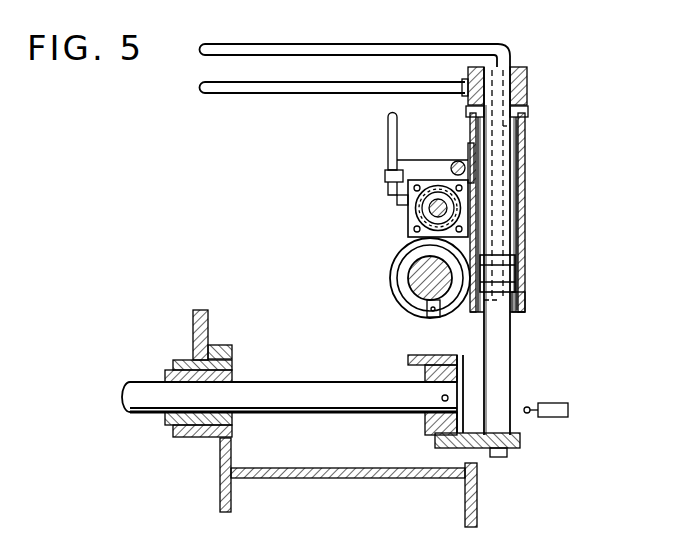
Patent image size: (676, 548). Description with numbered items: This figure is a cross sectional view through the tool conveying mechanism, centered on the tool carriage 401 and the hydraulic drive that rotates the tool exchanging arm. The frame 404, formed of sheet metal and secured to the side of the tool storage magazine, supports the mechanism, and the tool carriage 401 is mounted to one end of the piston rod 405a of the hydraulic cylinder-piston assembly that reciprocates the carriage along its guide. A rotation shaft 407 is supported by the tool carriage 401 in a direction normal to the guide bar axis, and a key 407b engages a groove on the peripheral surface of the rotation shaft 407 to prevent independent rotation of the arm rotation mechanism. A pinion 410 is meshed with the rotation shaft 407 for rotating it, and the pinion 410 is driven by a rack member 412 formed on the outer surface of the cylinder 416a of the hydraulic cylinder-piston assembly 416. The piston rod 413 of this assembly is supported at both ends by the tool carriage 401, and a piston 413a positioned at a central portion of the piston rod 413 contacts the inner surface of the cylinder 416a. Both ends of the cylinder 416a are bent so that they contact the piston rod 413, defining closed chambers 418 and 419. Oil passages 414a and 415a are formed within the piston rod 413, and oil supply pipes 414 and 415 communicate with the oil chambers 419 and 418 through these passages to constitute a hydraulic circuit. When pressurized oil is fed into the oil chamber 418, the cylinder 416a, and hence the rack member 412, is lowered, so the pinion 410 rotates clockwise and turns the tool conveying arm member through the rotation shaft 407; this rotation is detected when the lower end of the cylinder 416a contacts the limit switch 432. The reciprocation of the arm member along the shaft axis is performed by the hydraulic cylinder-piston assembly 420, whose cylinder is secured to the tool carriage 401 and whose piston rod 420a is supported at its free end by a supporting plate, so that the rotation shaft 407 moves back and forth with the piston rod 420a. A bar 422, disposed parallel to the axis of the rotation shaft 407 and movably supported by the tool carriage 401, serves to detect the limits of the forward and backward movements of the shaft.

The tool carriage 401 is at (430, 370).
The frame 404 is at (193, 325).
The piston rod 405a is at (292, 388).
The rotation shaft 407 is at (416, 277).
The key 407b is at (432, 313).
The pinion 410 is at (405, 263).
The rack member 412 is at (470, 145).
The piston rod 413 is at (505, 355).
The piston 413a is at (509, 272).
The oil supply pipe 414 is at (362, 46).
The oil passage 414a is at (507, 130).
The oil supply pipe 415 is at (294, 90).
The oil passage 415a is at (520, 236).
The hydraulic cylinder-piston assembly 416 is at (529, 183).
The cylinder 416a is at (521, 208).
The closed chamber 418 is at (515, 155).
The closed chamber 419 is at (516, 298).
The hydraulic cylinder-piston assembly 420 is at (410, 217).
The piston rod 420a is at (434, 209).
The bar 422 is at (452, 162).
The limit switch 432 is at (568, 410).